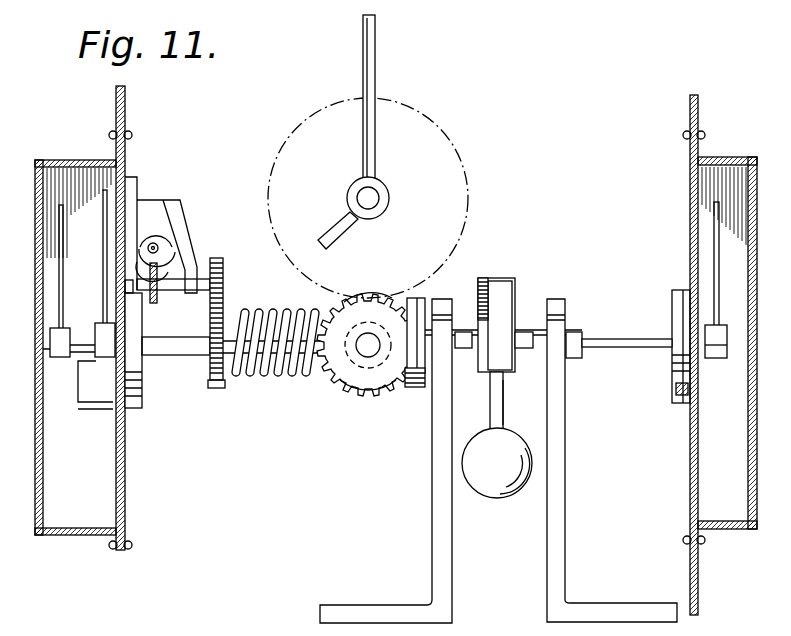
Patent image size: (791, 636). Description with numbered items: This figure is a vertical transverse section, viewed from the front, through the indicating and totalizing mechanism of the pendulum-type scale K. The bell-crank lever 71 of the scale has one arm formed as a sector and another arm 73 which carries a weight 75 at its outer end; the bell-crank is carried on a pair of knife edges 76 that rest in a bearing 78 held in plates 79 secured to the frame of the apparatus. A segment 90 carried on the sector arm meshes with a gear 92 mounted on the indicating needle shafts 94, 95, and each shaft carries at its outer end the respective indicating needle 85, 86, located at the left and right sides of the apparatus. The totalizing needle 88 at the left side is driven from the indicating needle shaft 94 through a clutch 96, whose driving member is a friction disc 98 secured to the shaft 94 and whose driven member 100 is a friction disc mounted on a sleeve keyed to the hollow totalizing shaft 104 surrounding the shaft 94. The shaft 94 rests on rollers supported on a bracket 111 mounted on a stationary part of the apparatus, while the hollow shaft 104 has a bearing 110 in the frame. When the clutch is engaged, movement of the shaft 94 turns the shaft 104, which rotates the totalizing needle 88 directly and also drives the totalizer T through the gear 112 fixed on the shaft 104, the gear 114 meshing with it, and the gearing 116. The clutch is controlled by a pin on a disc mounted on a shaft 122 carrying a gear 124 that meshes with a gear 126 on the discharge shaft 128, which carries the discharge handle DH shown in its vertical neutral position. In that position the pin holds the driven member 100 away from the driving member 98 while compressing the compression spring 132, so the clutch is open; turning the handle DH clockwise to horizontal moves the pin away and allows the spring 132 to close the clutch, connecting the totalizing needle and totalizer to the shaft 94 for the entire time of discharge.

The discharge handle DH is at (376, 80).
The discharge shaft 128 is at (372, 198).
The gear 126 is at (269, 208).
The totalizer T is at (165, 209).
The gearing 116 is at (176, 257).
The gear 114 is at (224, 283).
The totalizing needle 88 is at (104, 246).
The indicating needle 85 is at (62, 298).
The indicating needle shaft 94 is at (80, 345).
The hollow totalizing shaft 104 is at (168, 357).
The bearing 110 is at (140, 382).
The bracket 111 is at (92, 410).
The gear 112 is at (216, 388).
The compression spring 132 is at (256, 376).
The shaft 122 is at (366, 347).
The gear 124 is at (361, 384).
The driven member 100 is at (418, 288).
The friction disc 98 is at (424, 301).
The clutch 96 is at (412, 389).
The plates 79 is at (434, 525).
The knife edges 76 is at (582, 346).
The bell-crank lever 71 is at (500, 312).
The segment 90 is at (483, 283).
The scale K is at (516, 302).
The gear 92 is at (480, 401).
The arm 73 is at (503, 413).
The weight 75 is at (497, 463).
The bearing 78 is at (572, 358).
The indicating needle shaft 95 is at (634, 340).
The indicating needle 86 is at (716, 257).